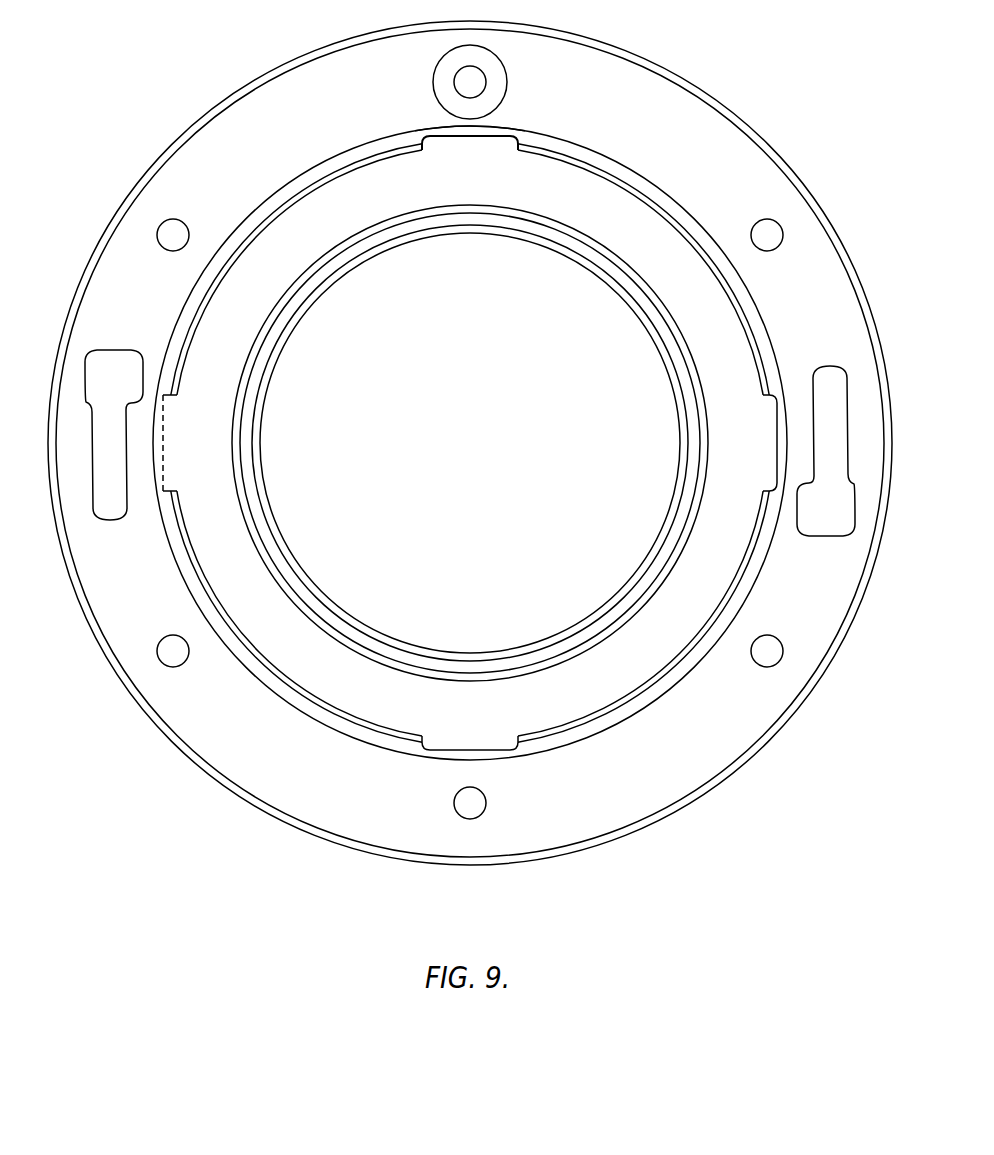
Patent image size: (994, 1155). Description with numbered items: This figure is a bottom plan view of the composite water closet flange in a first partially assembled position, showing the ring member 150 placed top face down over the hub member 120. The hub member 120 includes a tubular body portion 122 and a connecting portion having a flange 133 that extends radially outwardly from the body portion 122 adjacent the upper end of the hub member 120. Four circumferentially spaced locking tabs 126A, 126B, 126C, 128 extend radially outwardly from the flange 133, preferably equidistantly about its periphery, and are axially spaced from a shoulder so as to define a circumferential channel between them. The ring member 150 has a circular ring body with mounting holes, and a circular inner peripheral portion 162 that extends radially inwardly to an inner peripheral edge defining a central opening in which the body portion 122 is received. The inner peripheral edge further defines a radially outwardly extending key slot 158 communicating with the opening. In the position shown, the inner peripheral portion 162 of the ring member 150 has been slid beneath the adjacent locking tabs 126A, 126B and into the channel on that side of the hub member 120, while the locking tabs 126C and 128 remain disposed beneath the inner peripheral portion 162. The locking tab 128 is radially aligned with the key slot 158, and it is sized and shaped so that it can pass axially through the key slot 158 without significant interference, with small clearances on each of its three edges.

The hub member 120 is at (290, 540).
The tubular body portion 122 is at (248, 432).
The locking tab 126A is at (772, 412).
The locking tab 126B is at (460, 740).
The locking tab 126C is at (163, 500).
The locking tab 128 is at (488, 148).
The flange 133 is at (627, 213).
The ring member 150 is at (592, 850).
The key slot 158 is at (428, 131).
The inner peripheral portion 162 is at (598, 722).